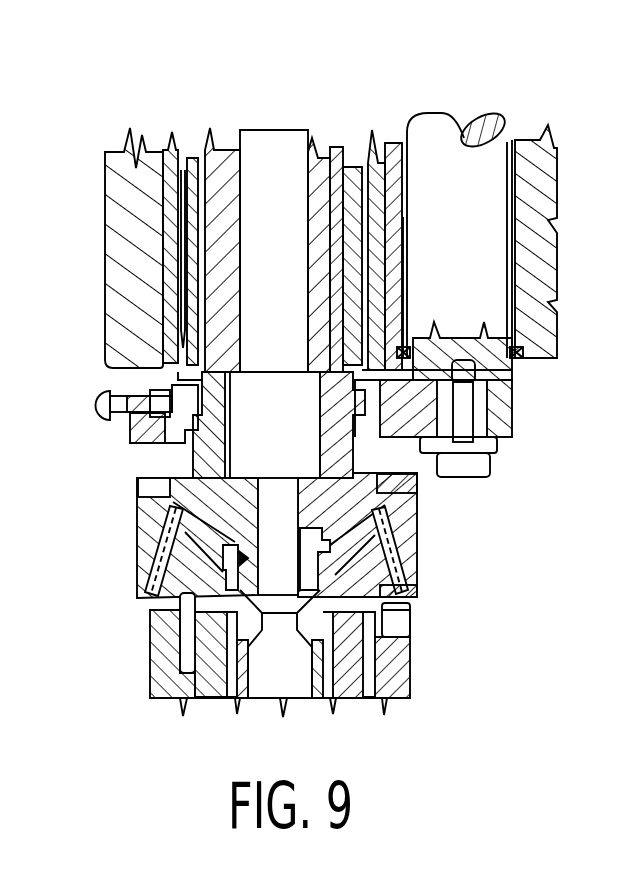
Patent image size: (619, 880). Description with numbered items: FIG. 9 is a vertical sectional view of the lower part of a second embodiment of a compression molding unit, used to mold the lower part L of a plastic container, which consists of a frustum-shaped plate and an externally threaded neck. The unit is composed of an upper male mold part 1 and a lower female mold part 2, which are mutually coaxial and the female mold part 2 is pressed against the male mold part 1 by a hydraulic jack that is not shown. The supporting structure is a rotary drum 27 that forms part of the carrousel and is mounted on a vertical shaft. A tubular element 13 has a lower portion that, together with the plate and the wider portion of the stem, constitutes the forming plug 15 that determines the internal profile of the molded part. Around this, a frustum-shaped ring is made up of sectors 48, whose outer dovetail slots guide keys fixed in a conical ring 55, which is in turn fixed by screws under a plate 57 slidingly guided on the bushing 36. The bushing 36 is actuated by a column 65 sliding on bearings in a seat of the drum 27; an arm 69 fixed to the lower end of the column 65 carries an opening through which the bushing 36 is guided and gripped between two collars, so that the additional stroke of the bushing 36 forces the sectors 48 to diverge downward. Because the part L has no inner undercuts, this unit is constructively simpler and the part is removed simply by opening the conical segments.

The column 65 is at (492, 160).
The tubular element 13 is at (210, 305).
The rotary drum 27 is at (545, 362).
The arm 69 is at (502, 412).
The upper male mold part 1 is at (105, 494).
The plate 57 is at (415, 492).
The bushing 36 is at (345, 516).
The sectors 48 is at (383, 596).
The conical ring 55 is at (140, 550).
The forming plug 15 is at (192, 598).
The lower part of a container L is at (410, 627).
The lower female mold part 2 is at (433, 672).